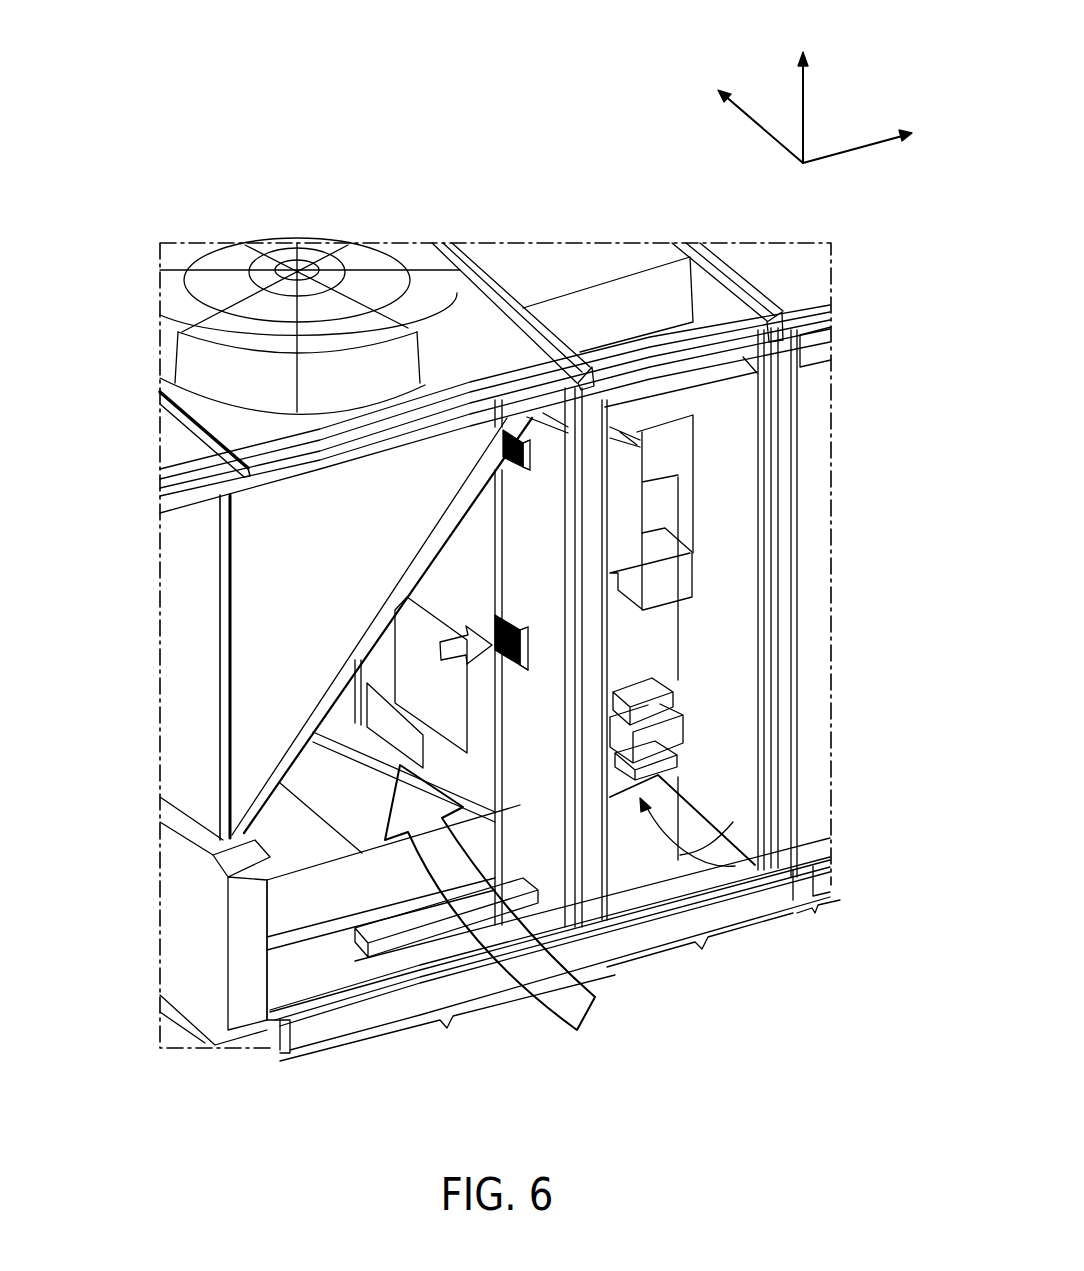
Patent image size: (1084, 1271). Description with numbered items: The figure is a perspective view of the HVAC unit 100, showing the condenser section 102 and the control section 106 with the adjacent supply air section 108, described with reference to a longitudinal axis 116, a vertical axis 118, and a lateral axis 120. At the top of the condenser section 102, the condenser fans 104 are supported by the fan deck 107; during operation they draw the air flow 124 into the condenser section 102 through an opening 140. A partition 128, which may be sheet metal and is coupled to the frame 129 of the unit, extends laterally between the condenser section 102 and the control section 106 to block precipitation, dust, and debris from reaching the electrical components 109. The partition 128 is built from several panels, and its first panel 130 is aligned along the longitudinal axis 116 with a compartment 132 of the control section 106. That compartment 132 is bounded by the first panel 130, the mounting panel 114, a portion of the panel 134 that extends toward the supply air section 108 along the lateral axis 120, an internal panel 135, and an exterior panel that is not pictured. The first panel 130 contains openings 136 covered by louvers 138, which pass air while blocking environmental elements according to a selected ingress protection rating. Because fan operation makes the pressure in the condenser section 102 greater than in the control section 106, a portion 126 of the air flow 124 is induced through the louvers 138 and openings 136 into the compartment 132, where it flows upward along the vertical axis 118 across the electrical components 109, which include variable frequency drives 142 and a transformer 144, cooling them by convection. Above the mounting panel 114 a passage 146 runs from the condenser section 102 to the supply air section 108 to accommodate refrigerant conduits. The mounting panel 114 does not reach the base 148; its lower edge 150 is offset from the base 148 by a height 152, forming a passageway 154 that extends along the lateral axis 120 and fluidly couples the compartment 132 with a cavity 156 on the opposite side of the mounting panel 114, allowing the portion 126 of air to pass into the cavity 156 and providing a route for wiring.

The HVAC unit 100 is at (228, 200).
The condenser section 102 is at (447, 1018).
The condenser fans 104 is at (362, 258).
The control section 106 is at (700, 947).
The fan deck 107 is at (490, 337).
The supply air section 108 is at (820, 924).
The electrical components 109 is at (678, 455).
The mounting panel 114 is at (617, 654).
The longitudinal axis 116 is at (853, 152).
The vertical axis 118 is at (805, 113).
The lateral axis 120 is at (768, 128).
The air flow 124 is at (562, 1025).
The portion of the air flow 126 is at (440, 644).
The partition 128 is at (476, 549).
The frame 129 is at (590, 850).
The first panel 130 is at (514, 784).
The compartment 132 is at (733, 725).
The panel 134 is at (707, 654).
The internal panel 135 is at (687, 340).
The openings 136 is at (527, 632).
The louvers 138 is at (510, 460).
The opening 140 is at (332, 781).
The variable frequency drives 142 is at (614, 470).
The transformer 144 is at (683, 733).
The passage 146 is at (667, 323).
The base 148 is at (740, 870).
The lower edge 150 is at (620, 797).
The height 152 is at (686, 779).
The passageway 154 is at (683, 853).
The cavity 156 is at (537, 279).